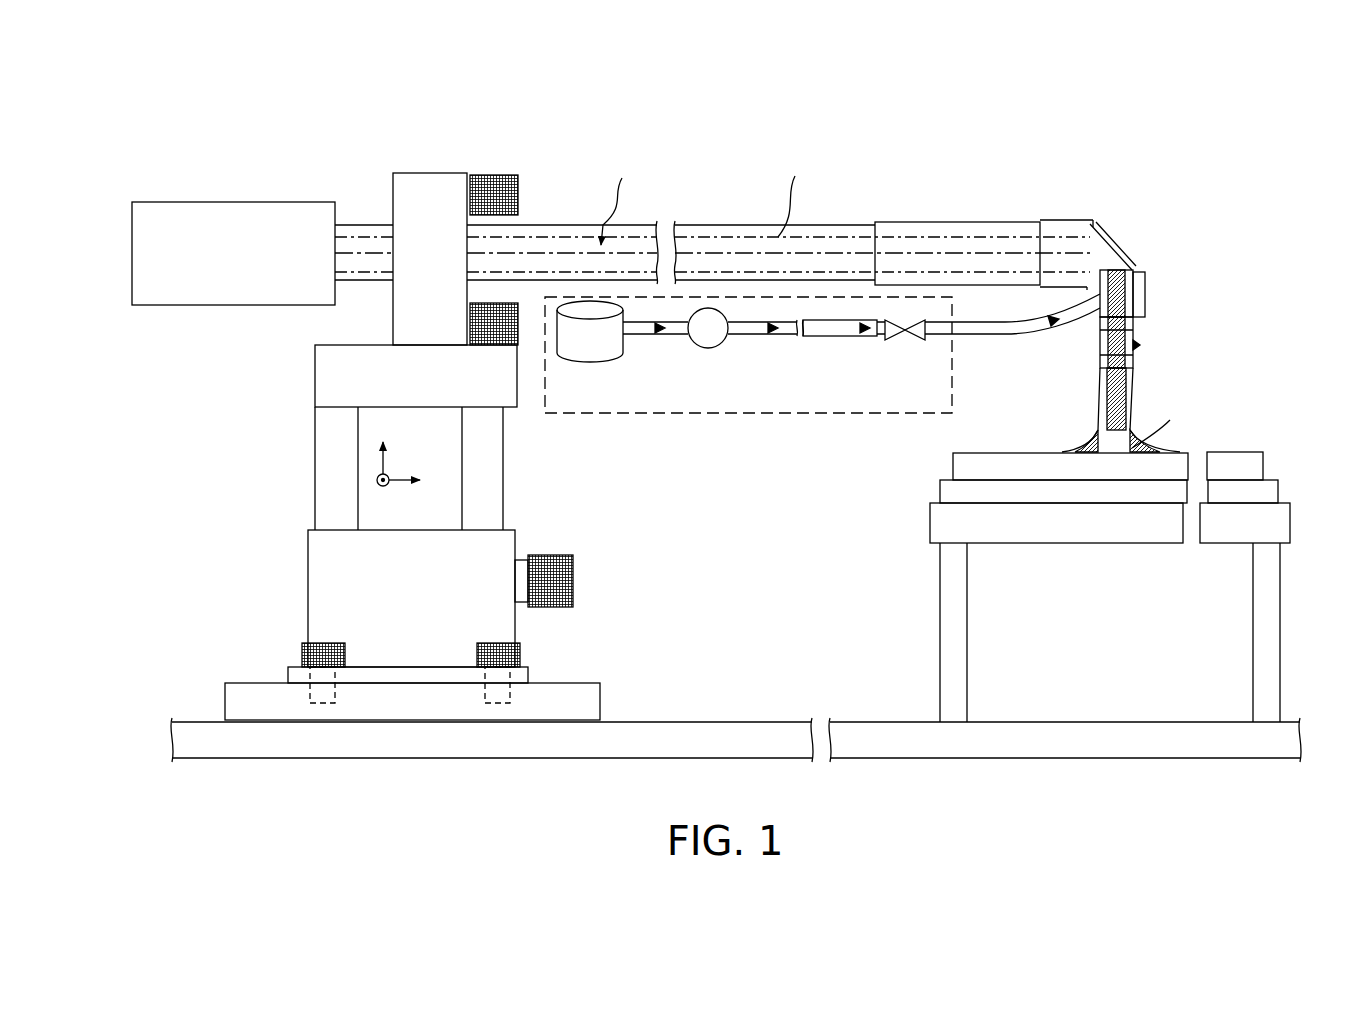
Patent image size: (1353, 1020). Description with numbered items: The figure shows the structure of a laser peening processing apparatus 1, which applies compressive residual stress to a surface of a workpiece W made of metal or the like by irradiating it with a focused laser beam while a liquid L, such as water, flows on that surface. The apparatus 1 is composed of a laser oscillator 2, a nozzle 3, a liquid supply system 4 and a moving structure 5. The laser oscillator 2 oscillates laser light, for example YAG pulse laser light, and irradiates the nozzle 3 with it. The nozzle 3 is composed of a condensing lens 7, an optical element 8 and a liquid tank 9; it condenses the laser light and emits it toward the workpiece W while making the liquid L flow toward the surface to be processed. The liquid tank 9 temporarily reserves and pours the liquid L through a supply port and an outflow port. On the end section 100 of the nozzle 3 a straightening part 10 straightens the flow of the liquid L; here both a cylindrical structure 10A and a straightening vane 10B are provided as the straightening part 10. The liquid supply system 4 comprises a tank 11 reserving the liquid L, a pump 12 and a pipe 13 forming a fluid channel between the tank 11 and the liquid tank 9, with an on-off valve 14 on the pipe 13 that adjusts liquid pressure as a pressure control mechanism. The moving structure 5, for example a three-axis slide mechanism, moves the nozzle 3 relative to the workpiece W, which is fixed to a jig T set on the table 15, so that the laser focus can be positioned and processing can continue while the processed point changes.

The laser peening processing apparatus 1 is at (1254, 124).
The laser oscillator 2 is at (312, 200).
The nozzle 3 is at (1185, 190).
The liquid supply system 4 is at (810, 420).
The moving structure 5 is at (315, 378).
The condensing lens 7 is at (993, 222).
The optical element 8 is at (1133, 262).
The liquid tank 9 is at (1145, 296).
The straightening part 10 is at (1142, 337).
The cylindrical structure 10A is at (1100, 332).
The straightening vane 10B is at (1100, 364).
The tank 11 is at (590, 355).
The pump 12 is at (718, 345).
The pipe 13 is at (845, 340).
The on-off valve 14 is at (912, 342).
The table 15 is at (930, 522).
The end section 100 is at (1145, 355).
The liquid L is at (1128, 405).
The workpiece W is at (953, 463).
The jig T is at (940, 490).